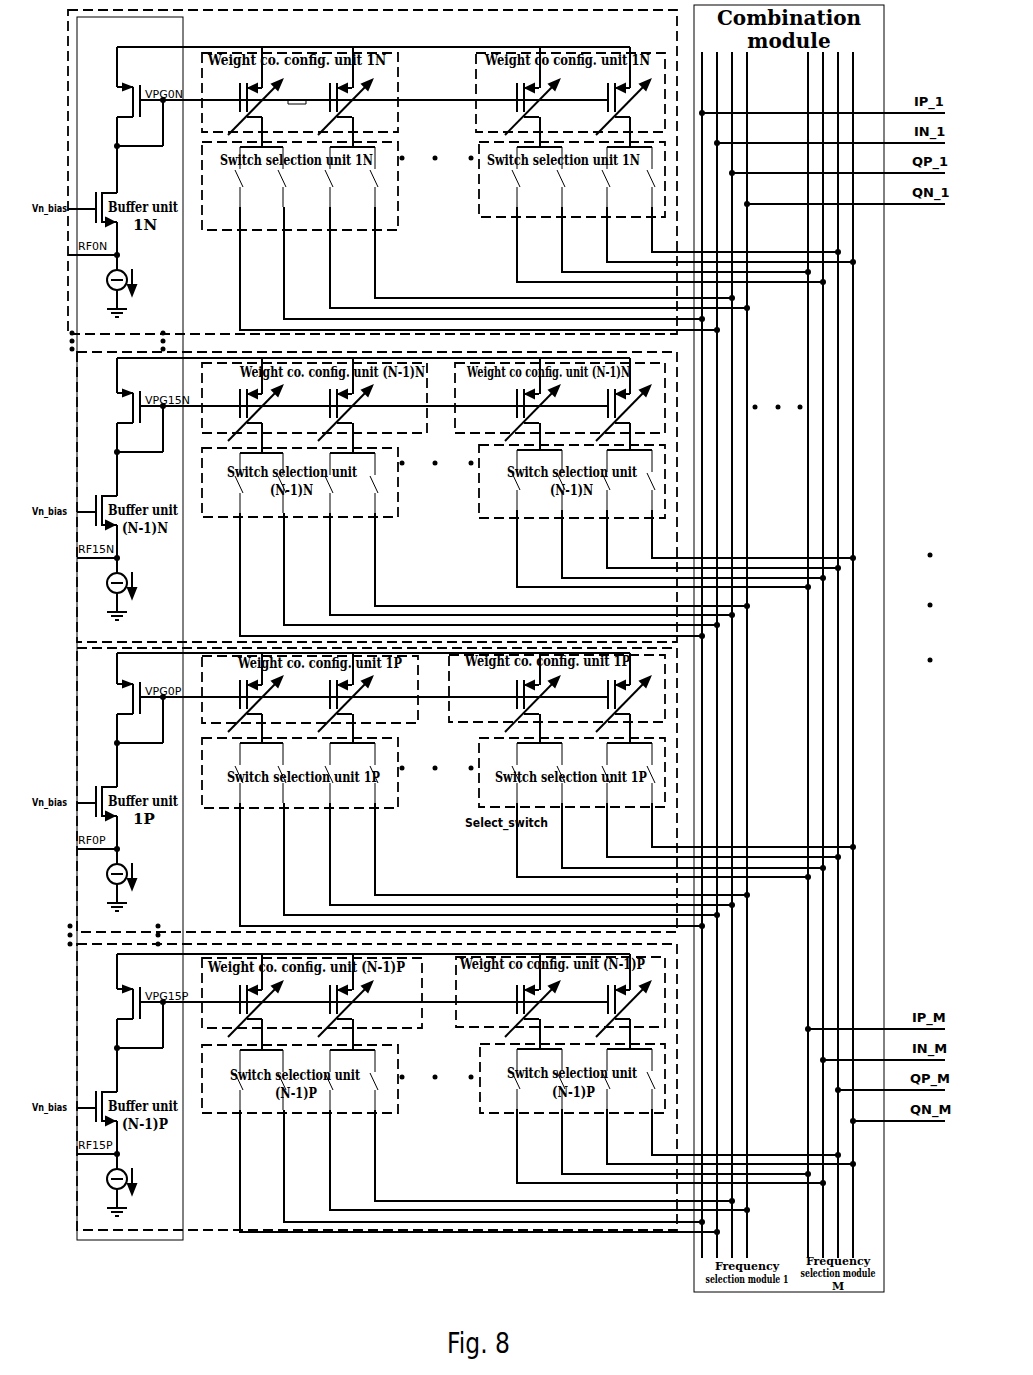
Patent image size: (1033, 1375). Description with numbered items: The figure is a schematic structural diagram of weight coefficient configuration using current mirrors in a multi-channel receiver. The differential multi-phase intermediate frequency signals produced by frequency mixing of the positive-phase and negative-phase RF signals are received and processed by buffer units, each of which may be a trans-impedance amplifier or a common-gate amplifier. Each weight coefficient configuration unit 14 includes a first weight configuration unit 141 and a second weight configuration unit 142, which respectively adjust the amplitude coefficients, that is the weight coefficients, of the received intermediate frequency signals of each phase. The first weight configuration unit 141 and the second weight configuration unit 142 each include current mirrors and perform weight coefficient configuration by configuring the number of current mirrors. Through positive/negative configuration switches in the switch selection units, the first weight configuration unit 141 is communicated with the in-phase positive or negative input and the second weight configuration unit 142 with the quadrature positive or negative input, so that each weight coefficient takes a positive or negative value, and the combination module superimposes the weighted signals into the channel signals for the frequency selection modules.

The weight coefficient configuration unit 14 is at (433, 540).
The first weight configuration unit 141 is at (240, 89).
The second weight configuration unit 142 is at (330, 97).